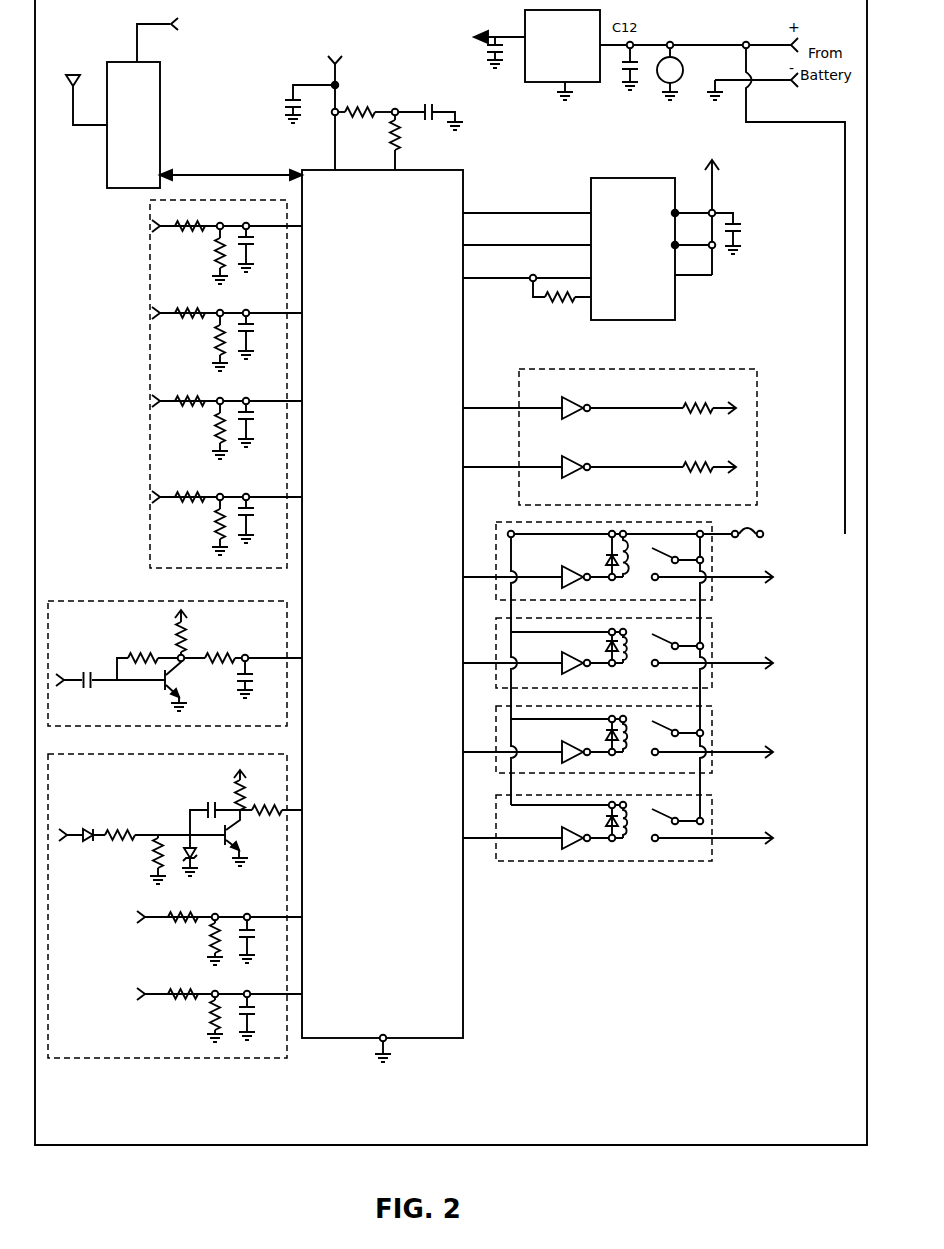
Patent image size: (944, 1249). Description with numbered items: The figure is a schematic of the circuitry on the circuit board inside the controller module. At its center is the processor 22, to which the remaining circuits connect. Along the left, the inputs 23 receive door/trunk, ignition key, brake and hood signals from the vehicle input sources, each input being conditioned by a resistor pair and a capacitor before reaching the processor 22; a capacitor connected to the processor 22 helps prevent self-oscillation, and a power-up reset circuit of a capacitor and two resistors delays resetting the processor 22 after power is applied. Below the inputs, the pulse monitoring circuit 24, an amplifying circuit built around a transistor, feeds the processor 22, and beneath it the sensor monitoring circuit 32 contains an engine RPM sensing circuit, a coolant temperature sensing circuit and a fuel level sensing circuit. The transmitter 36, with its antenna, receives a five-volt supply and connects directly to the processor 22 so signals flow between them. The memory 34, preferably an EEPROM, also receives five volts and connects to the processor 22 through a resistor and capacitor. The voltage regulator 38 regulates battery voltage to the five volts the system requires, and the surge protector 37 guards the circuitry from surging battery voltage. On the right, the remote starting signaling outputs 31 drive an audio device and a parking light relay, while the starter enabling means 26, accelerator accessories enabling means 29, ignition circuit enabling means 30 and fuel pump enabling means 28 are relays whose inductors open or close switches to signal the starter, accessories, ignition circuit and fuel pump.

The processor 22 is at (396, 614).
The inputs 23 is at (150, 393).
The pulse monitoring circuit 24 is at (98, 600).
The starter enabling means 26 is at (713, 572).
The fuel pump enabling means 28 is at (713, 832).
The accelerator accessories enabling means 29 is at (713, 658).
The ignition circuit enabling means 30 is at (713, 745).
The remote starting signaling outputs 31 is at (705, 369).
The sensor monitoring circuit 32 is at (232, 1058).
The memory 34 is at (646, 258).
The transmitter 36 is at (146, 142).
The surge protector 37 is at (683, 64).
The voltage regulator 38 is at (575, 58).